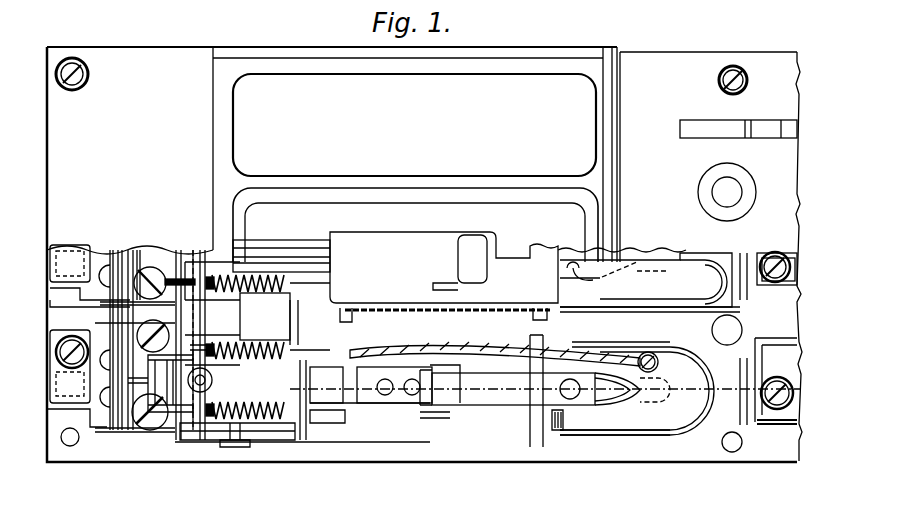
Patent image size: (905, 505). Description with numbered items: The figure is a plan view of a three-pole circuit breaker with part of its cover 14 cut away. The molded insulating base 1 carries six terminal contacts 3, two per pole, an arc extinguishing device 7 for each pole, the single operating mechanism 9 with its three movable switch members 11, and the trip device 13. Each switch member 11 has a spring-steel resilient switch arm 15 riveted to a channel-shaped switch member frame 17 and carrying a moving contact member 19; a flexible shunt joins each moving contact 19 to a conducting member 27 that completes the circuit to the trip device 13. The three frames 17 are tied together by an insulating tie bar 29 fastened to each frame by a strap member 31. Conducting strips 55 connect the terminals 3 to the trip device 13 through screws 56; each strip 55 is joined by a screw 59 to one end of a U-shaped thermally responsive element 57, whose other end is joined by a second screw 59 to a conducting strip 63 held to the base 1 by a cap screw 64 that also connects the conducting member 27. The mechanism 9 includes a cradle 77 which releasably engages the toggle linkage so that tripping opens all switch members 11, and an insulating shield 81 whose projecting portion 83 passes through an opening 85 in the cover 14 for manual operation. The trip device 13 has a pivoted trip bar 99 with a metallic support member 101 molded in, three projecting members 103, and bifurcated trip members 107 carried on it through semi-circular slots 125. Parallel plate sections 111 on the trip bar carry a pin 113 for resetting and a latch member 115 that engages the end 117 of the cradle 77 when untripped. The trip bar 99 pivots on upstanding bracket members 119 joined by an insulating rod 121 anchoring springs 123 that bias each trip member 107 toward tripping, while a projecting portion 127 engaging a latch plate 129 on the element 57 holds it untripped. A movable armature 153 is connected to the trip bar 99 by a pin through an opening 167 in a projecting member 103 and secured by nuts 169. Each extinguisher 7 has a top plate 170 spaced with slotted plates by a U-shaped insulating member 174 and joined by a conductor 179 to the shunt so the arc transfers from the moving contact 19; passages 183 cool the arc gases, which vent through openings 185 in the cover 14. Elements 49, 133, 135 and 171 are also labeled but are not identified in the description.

The base 1 is at (686, 464).
The terminal contacts 3 is at (50, 268).
The arc extinguishing device 7 is at (698, 277).
The circuit breaker operating mechanism 9 is at (388, 291).
The movable switch members 11 is at (502, 393).
The trip device 13 is at (152, 332).
The cover 14 is at (632, 52).
The resilient switch arm 15 is at (600, 268).
The switch member frame 17 is at (450, 408).
The moving contact member 19 is at (636, 262).
The conducting member 27 is at (378, 402).
The insulating tie bar 29 is at (536, 412).
The strap member 31 is at (556, 425).
The screw 49 is at (785, 248).
The conducting strips 55 is at (96, 336).
The screws 56 is at (56, 342).
The thermally responsive elements 57 is at (108, 250).
The screw 59 is at (174, 248).
The conducting strip 63 is at (212, 318).
The cap screw 64 is at (290, 240).
The cradle 77 is at (330, 250).
The insulating shield 81 is at (527, 258).
The projecting portion 83 is at (486, 250).
The opening 85 is at (360, 244).
The trip bar 99 is at (265, 316).
The metallic support member 101 is at (265, 442).
The outwardly projecting members 103 is at (212, 313).
The trip members 107 is at (138, 432).
The plate sections 111 is at (332, 265).
The pin 113 is at (332, 250).
The latch member 115 is at (225, 262).
The end of the carrier 117 is at (300, 244).
The upstanding bracket members 119 is at (230, 447).
The insulating rod 121 is at (218, 444).
The springs 123 is at (306, 444).
The semi-circular slot 125 is at (290, 348).
The projecting portion 127 is at (140, 250).
The latch plate 129 is at (124, 248).
The plate 133 is at (90, 297).
The plate 135 is at (100, 400).
The movable armature 153 is at (210, 378).
The openings 167 is at (180, 262).
The nuts 169 is at (230, 340).
The top plate 170 is at (648, 308).
The spring 171 is at (205, 343).
The U-shaped insulating member 174 is at (672, 350).
The conductor 179 is at (486, 350).
The passages 183 is at (720, 285).
The openings 185 is at (697, 126).